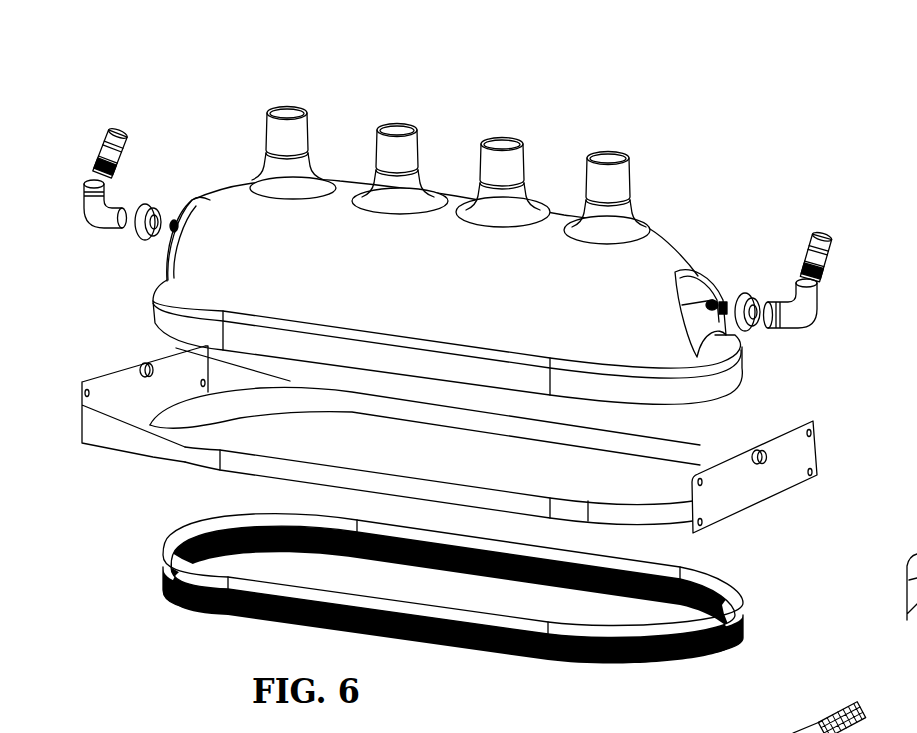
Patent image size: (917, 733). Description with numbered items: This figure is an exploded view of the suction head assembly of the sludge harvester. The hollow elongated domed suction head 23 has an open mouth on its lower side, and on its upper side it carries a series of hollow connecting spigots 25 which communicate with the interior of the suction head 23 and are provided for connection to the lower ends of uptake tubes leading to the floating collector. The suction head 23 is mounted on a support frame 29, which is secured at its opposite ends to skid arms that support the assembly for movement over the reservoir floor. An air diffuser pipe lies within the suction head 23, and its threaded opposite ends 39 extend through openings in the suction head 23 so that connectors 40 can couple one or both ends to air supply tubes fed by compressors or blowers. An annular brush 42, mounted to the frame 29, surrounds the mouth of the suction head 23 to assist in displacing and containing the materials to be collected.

The suction head 23 is at (676, 210).
The connecting spigots 25 is at (390, 123).
The support frame 29 is at (788, 462).
The threaded ends 39 is at (173, 224).
The connectors 40 is at (92, 152).
The annular brush 42 is at (205, 630).